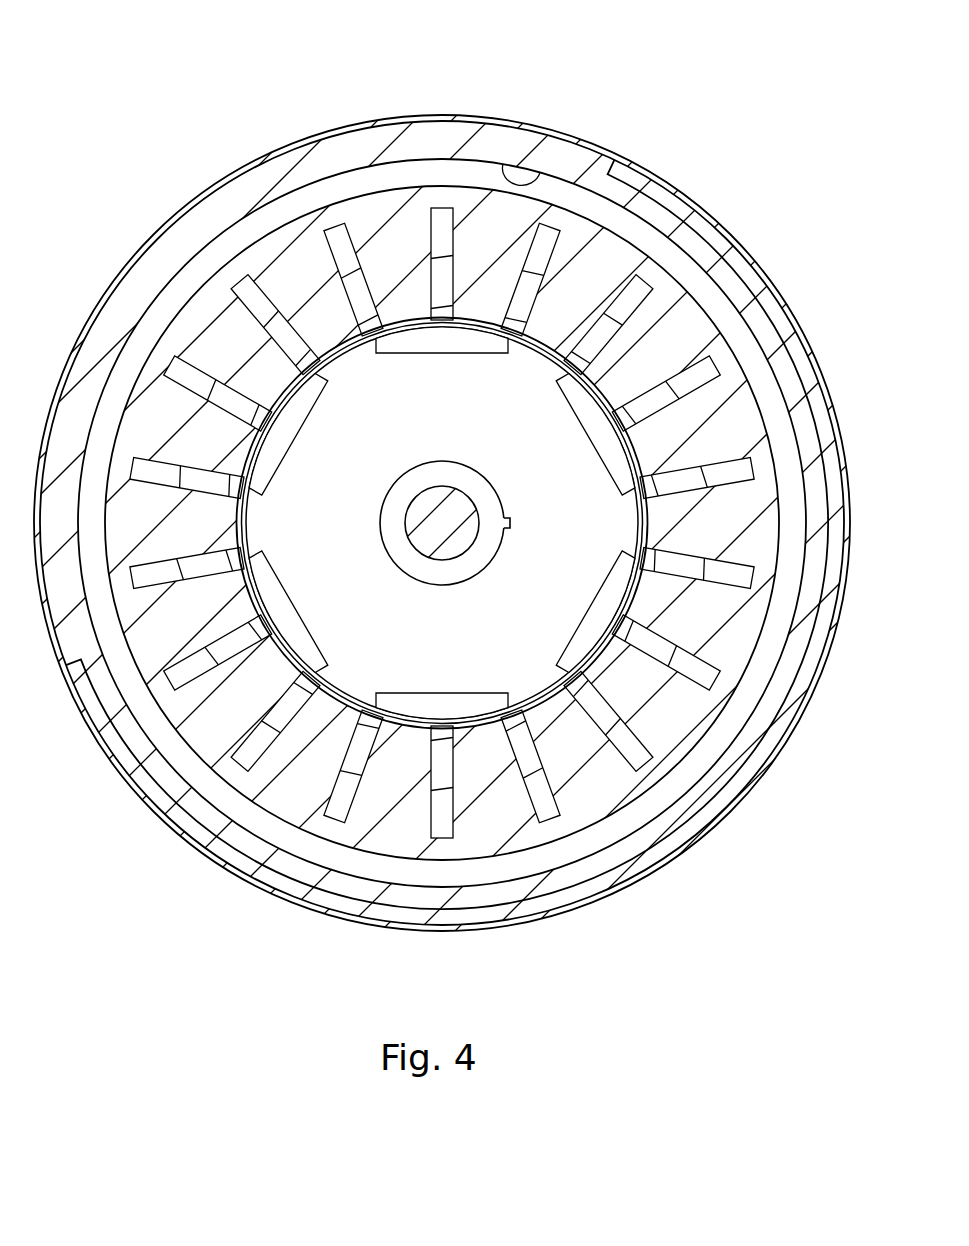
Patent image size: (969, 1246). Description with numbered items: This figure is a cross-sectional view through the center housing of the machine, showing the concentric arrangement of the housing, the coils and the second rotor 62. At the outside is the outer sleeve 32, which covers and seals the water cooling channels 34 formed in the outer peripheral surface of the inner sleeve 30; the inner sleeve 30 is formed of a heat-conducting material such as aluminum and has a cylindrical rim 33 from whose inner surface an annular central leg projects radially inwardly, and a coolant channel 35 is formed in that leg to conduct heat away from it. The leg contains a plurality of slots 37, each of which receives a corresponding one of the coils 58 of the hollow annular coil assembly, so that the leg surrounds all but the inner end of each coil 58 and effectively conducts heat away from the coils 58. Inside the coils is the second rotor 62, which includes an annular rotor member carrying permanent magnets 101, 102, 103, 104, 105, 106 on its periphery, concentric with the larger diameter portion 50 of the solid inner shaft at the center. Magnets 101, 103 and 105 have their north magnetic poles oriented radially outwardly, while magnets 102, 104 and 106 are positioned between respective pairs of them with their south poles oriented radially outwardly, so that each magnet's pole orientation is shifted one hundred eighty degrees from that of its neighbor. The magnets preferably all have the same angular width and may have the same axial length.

The inner sleeve 30 is at (350, 115).
The outer sleeve 32 is at (481, 99).
The cylindrical rim 33 is at (198, 220).
The water cooling channels 34 is at (758, 258).
The coolant channel 35 is at (541, 172).
The slots 37 is at (186, 456).
The larger diameter portion 50 is at (427, 498).
The coil assembly 58 is at (711, 442).
The second rotor 62 is at (522, 449).
The permanent magnet 101 is at (457, 347).
The permanent magnet 102 is at (603, 449).
The permanent magnet 103 is at (585, 626).
The permanent magnet 104 is at (460, 693).
The permanent magnet 105 is at (289, 582).
The permanent magnet 106 is at (284, 460).